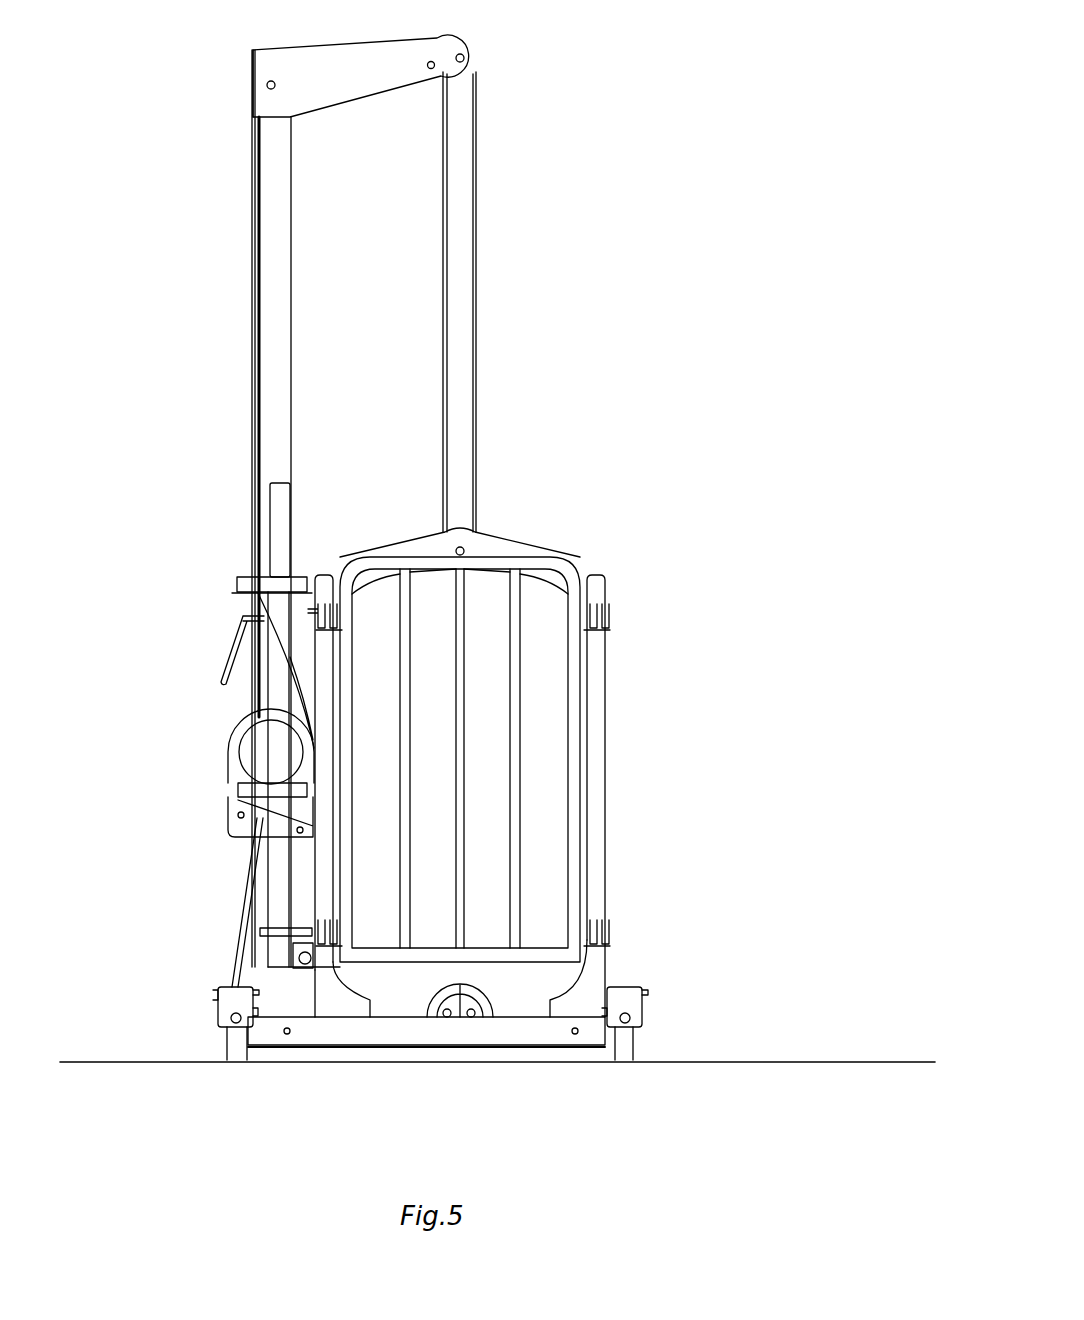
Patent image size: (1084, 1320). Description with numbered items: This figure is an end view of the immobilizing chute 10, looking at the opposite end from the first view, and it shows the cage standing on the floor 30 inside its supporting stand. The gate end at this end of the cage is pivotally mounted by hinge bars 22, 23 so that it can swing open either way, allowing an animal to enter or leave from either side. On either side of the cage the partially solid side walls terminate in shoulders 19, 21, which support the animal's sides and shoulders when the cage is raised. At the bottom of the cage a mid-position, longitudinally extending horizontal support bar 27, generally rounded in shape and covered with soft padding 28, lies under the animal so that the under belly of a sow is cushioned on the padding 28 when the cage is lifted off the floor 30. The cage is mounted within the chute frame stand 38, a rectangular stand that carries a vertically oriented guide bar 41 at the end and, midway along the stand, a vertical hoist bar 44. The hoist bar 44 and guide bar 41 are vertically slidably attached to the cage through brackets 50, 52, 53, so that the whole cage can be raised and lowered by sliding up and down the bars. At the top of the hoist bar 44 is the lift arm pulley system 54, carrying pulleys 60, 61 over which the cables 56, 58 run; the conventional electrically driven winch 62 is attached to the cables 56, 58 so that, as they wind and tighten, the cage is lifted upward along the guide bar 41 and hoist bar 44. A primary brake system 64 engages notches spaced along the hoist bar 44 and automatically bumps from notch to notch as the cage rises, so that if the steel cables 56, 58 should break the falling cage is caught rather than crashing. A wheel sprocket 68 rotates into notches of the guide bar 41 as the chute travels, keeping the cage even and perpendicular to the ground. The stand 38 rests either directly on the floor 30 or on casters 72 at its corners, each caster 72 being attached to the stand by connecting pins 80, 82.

The immobilizing chute 10 is at (724, 103).
The shoulder 19 is at (355, 975).
The shoulder 21 is at (568, 978).
The hinge bar 22 is at (333, 690).
The hinge bar 23 is at (598, 747).
The horizontal support bar 27 is at (454, 1000).
The soft padding 28 is at (480, 994).
The floor 30 is at (738, 1060).
The chute frame stand 38 is at (522, 1035).
The vertical guide bar 41 is at (291, 508).
The vertical hoist bar 44 is at (292, 366).
The bracket 50 is at (240, 580).
The bracket 52 is at (265, 929).
The bracket 53 is at (240, 790).
The lift arm pulley system 54 is at (345, 58).
The winch cable 56 is at (478, 228).
The lift cable 58 is at (261, 286).
The pulley 60 is at (480, 47).
The pulley 61 is at (251, 72).
The electrically driven winch 62 is at (244, 745).
The primary brake system 64 is at (232, 655).
The wheel sprocket 68 is at (290, 950).
The caster 72 is at (235, 1060).
The connecting pin 80 is at (218, 991).
The connecting pin 82 is at (216, 1012).